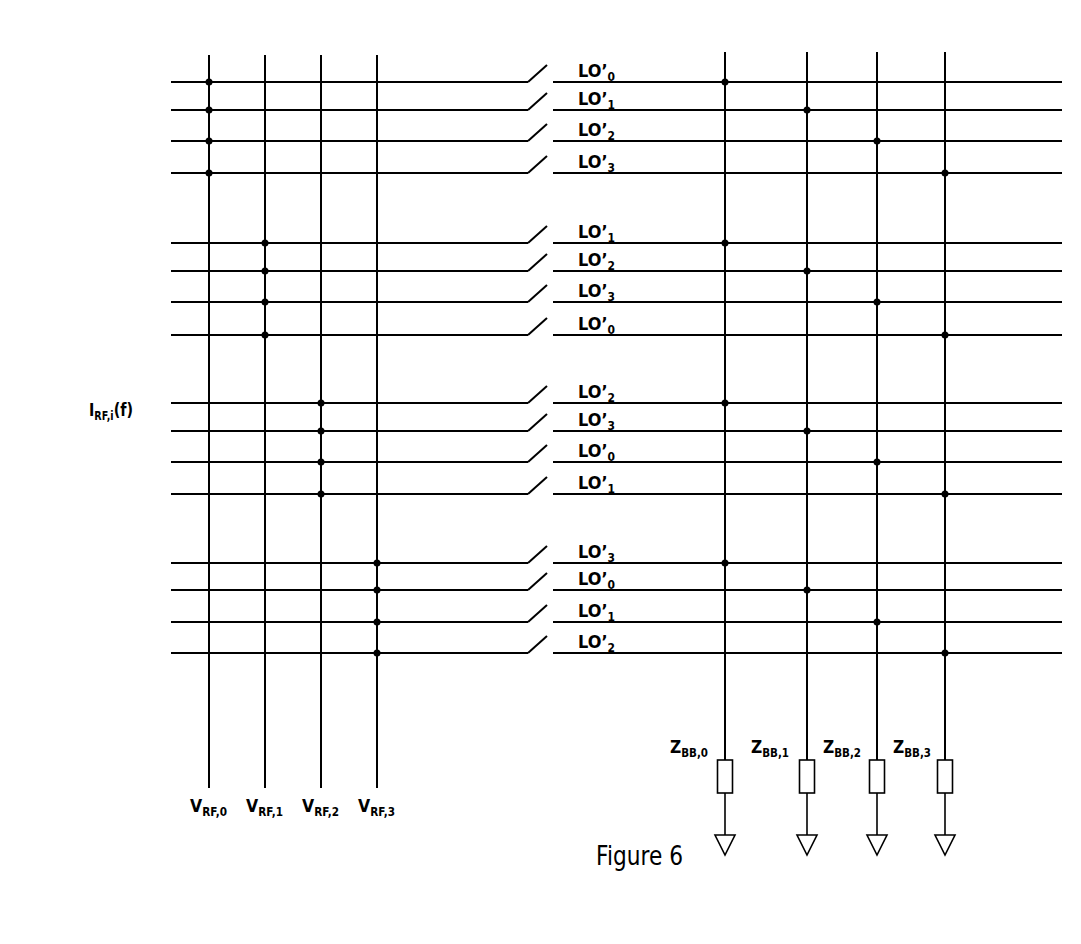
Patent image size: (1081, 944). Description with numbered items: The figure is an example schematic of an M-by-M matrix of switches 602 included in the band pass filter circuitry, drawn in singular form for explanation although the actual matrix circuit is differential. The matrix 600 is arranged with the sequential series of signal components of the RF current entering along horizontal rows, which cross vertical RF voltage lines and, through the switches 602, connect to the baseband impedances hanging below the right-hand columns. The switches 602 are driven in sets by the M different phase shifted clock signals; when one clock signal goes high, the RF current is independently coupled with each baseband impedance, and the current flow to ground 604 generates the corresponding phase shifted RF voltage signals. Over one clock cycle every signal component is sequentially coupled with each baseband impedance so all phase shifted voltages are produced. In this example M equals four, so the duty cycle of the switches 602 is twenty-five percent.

The passive mixer matrix (RF inputs and LO rows) 600 is at (616, 421).
The switches 602 is at (545, 686).
The ground 604 is at (957, 836).